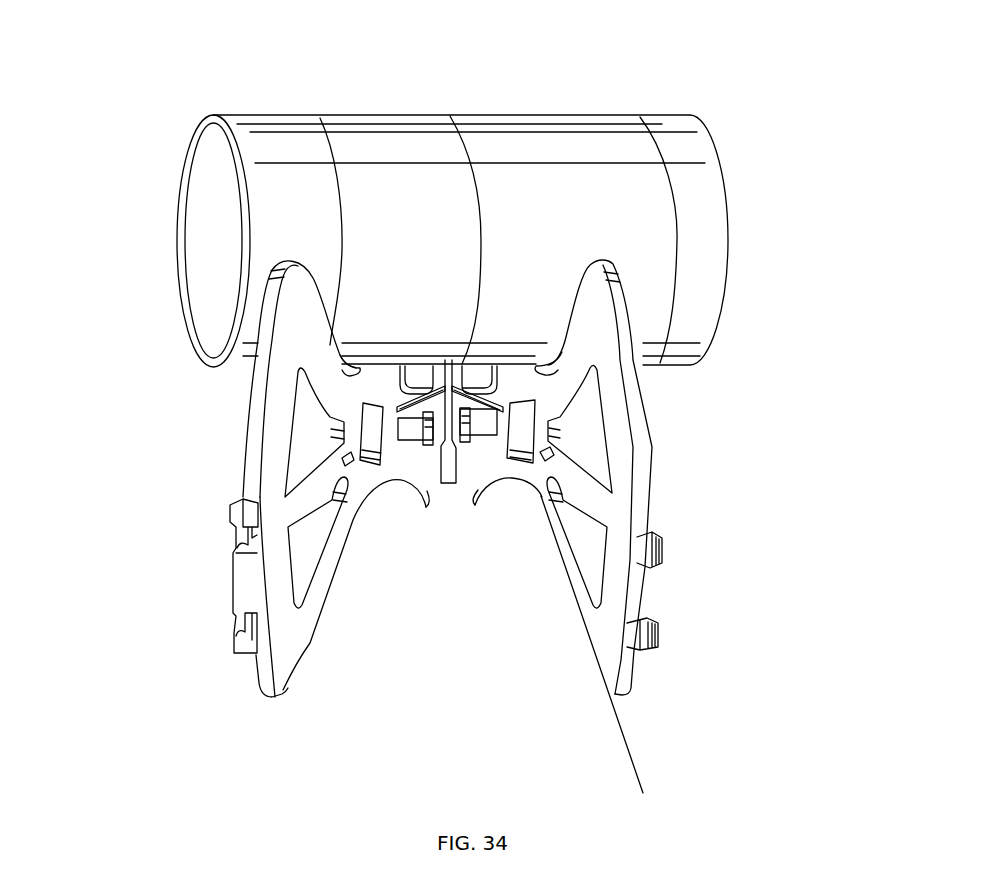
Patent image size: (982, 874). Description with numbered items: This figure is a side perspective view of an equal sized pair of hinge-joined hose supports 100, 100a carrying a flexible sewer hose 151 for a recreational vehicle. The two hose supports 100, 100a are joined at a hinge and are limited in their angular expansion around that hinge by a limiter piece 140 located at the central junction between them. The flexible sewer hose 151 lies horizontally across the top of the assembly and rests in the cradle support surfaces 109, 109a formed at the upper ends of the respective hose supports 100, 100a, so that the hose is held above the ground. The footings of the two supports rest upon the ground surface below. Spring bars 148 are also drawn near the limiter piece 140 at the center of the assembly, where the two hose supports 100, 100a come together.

The flexible sewer hose 151 is at (383, 167).
The hose support 100 is at (625, 317).
The hose support 100a is at (294, 347).
The cradle support surface 109 is at (558, 368).
The cradle support surface 109a is at (352, 373).
The spring bar 148 is at (391, 413).
The limiter piece 140 is at (440, 482).